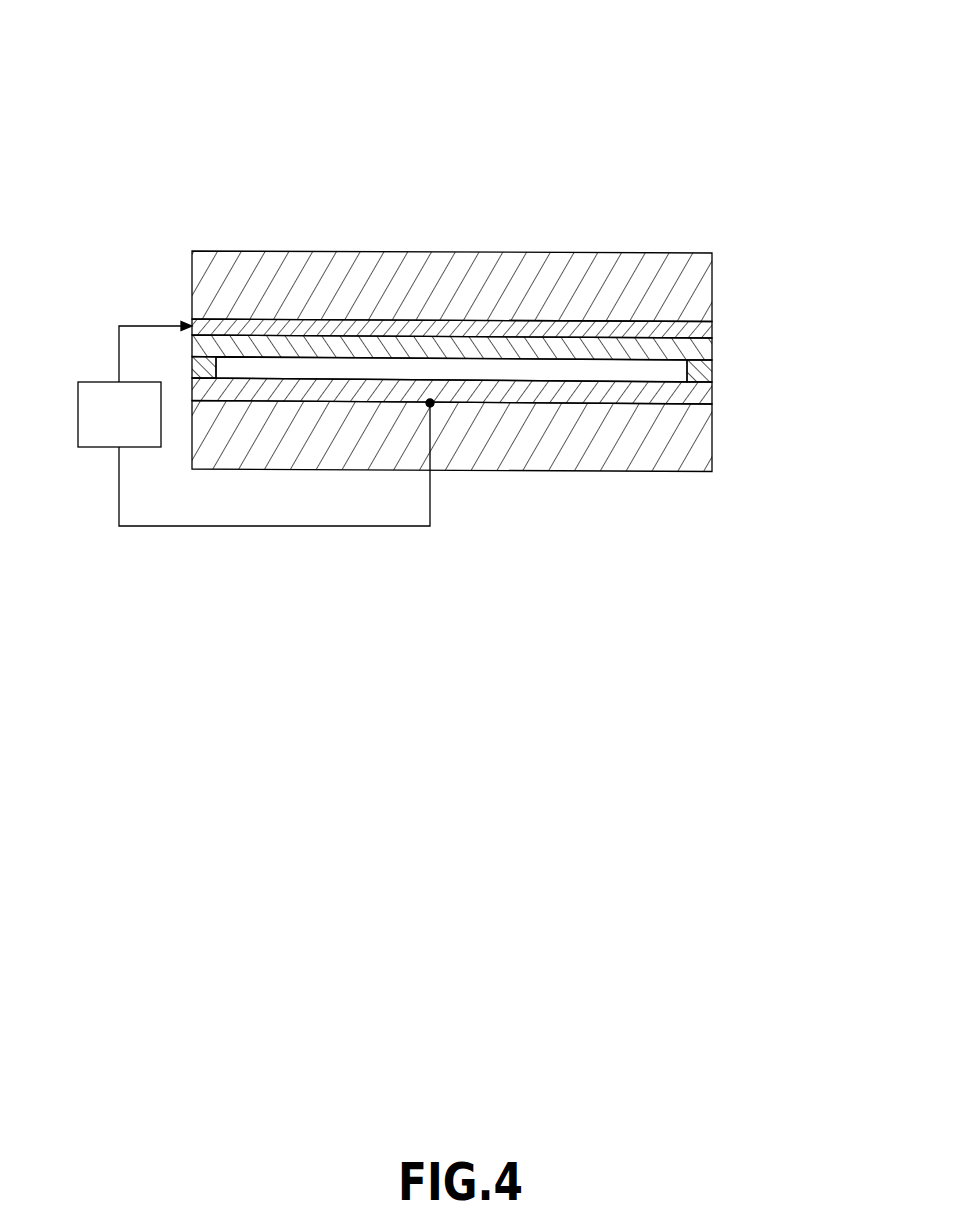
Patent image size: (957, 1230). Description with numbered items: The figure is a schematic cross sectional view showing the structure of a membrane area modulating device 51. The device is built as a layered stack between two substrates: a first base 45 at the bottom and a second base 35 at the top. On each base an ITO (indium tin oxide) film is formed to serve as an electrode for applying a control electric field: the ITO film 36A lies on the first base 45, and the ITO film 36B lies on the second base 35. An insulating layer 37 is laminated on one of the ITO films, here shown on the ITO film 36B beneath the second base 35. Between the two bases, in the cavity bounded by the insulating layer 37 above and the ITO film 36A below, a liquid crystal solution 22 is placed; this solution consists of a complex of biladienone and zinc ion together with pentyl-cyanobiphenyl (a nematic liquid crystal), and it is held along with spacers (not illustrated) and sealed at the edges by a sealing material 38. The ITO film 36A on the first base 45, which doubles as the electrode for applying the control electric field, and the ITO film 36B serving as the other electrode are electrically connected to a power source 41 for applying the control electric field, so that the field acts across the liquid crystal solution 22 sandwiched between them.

The membrane area modulating device 51 is at (534, 295).
The liquid crystal solution 22 is at (242, 375).
The second base 35 is at (700, 283).
The ITO film 36B is at (703, 330).
The insulating layer 37 is at (698, 353).
The sealing material 38 is at (702, 372).
The ITO film 36A is at (710, 393).
The first base 45 is at (543, 452).
The power source 41 is at (85, 447).